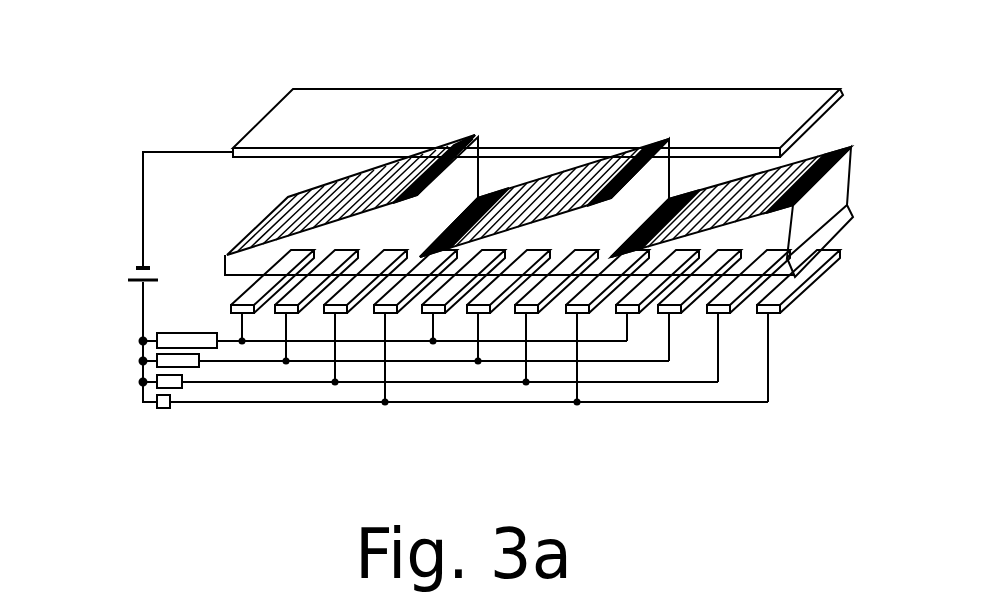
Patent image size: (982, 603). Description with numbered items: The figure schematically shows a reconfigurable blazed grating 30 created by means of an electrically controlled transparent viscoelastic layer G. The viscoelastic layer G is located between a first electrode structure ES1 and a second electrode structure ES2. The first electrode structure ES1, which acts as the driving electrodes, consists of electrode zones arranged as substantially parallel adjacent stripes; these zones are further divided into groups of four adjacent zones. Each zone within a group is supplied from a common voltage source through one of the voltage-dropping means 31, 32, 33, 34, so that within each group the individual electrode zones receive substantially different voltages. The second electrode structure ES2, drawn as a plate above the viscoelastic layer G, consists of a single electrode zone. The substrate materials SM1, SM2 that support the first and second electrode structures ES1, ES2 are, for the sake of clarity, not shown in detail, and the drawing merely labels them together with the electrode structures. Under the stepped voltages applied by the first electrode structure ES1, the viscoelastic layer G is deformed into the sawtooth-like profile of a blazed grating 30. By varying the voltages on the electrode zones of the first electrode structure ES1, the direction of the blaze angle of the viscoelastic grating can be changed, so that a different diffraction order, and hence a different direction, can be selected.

The reconfigurable blazed grating 30 is at (182, 78).
The voltage-dropping means 31 is at (157, 338).
The voltage-dropping means 32 is at (157, 362).
The voltage-dropping means 33 is at (143, 381).
The voltage-dropping means 34 is at (145, 402).
The electrically controlled transparent viscoelastic layer G is at (602, 157).
The first electrode structure ES1 is at (541, 349).
The substrate material SM1 is at (797, 287).
The second electrode structure ES2 is at (538, 82).
The substrate material SM2 is at (713, 128).